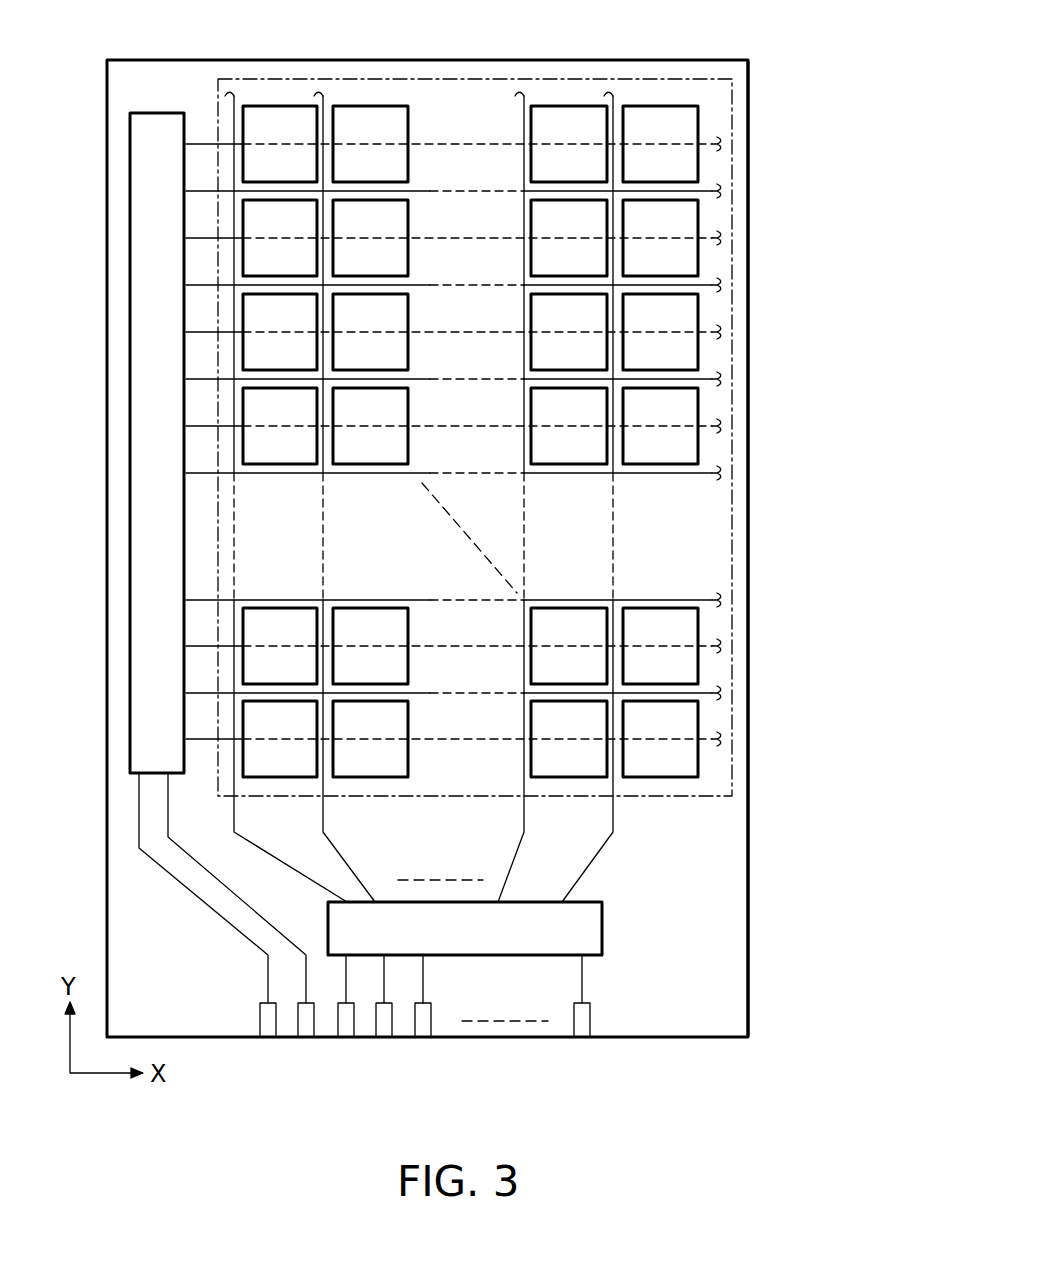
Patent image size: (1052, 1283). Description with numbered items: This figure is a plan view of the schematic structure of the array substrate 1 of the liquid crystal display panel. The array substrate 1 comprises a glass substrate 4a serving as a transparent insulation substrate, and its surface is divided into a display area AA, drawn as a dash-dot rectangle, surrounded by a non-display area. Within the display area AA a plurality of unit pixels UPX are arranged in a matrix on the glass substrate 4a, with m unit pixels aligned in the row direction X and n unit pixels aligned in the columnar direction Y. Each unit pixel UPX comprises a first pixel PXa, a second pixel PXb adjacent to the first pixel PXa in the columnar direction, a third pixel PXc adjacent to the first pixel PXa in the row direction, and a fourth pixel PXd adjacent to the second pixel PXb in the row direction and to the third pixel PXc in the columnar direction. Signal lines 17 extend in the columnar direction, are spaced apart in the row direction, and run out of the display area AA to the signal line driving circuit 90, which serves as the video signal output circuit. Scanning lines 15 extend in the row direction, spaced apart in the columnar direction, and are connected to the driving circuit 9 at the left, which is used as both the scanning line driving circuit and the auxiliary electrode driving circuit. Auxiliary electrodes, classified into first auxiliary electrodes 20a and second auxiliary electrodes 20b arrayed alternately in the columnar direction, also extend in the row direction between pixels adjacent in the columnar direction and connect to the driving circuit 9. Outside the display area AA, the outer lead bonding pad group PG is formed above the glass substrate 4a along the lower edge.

The array substrate 1 is at (762, 50).
The glass substrate 4a is at (749, 70).
The display area AA is at (455, 87).
The driving circuit 9 is at (129, 550).
The signal line 17 is at (237, 95).
The scanning line 15 is at (203, 144).
The first auxiliary electrode 20a is at (203, 191).
The second auxiliary electrode 20b is at (203, 285).
The first pixel PXa is at (608, 115).
The second pixel PXb is at (608, 212).
The third pixel PXc is at (699, 160).
The fourth pixel PXd is at (699, 256).
The unit pixel UPX is at (812, 95).
The signal line driving circuit 90 is at (604, 926).
The outer lead bonding pad group PG is at (425, 1055).